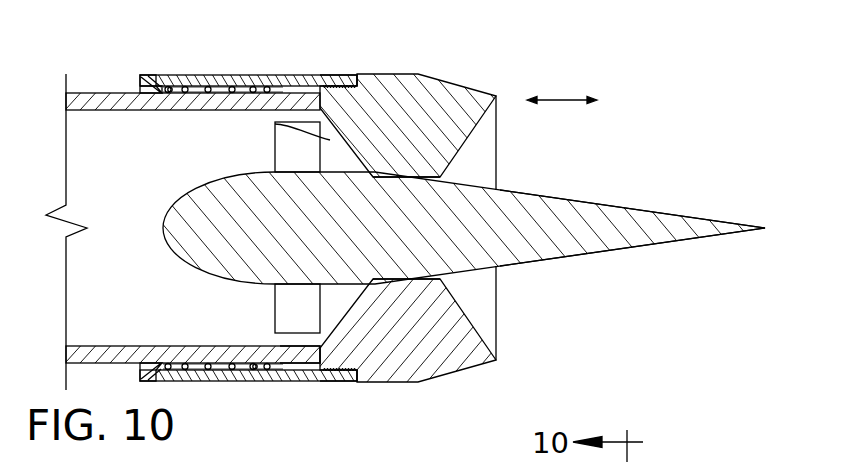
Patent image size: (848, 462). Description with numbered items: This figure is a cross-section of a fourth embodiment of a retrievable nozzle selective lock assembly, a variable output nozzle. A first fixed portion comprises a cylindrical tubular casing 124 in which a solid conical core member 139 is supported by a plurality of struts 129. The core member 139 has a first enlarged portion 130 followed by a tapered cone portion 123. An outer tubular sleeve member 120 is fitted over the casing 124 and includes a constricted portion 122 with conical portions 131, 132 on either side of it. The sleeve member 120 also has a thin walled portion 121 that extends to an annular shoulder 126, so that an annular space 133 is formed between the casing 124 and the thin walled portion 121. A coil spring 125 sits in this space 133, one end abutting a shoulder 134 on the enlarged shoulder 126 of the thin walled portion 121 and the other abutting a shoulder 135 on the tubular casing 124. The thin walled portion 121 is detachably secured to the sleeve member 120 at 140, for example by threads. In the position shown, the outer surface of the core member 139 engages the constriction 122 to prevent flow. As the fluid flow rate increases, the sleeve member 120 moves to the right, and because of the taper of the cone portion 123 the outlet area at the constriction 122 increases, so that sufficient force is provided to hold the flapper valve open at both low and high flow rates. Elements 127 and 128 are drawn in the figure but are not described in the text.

The outer tubular sleeve member 120 is at (395, 74).
The thin walled portion 121 is at (325, 75).
The constricted portion 122 is at (440, 181).
The tapered cone portion 123 is at (590, 203).
The cylindrical tubular casing 124 is at (163, 110).
The coil spring 125 is at (172, 86).
The annular shoulder 126 is at (137, 85).
The ball 127 is at (258, 370).
The pipe end portion 128 is at (295, 355).
The struts 129 is at (275, 152).
The first enlarged portion 130 is at (190, 202).
The conical portion 131 is at (275, 124).
The conical portion 132 is at (480, 130).
The annular space 133 is at (218, 88).
The shoulder 134 is at (150, 90).
The shoulder 135 is at (267, 87).
The solid conical core member 139 is at (605, 270).
The threaded connection 140 is at (345, 82).